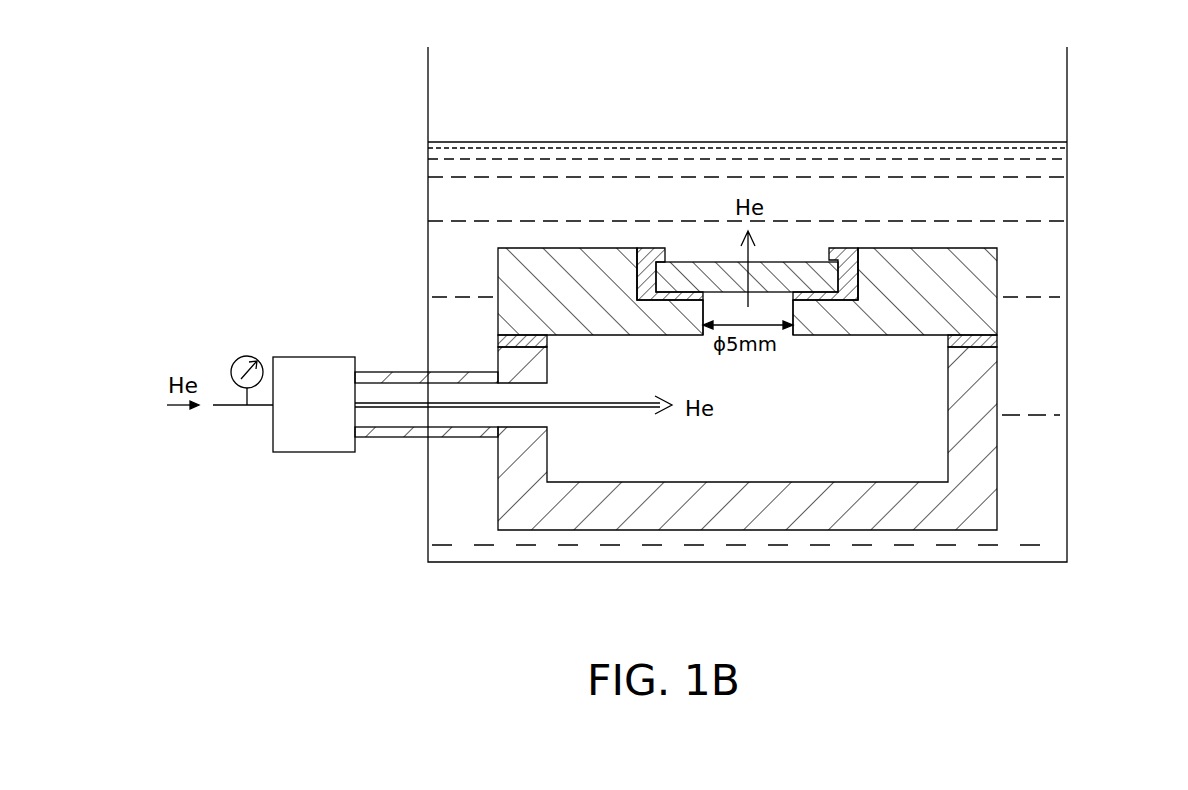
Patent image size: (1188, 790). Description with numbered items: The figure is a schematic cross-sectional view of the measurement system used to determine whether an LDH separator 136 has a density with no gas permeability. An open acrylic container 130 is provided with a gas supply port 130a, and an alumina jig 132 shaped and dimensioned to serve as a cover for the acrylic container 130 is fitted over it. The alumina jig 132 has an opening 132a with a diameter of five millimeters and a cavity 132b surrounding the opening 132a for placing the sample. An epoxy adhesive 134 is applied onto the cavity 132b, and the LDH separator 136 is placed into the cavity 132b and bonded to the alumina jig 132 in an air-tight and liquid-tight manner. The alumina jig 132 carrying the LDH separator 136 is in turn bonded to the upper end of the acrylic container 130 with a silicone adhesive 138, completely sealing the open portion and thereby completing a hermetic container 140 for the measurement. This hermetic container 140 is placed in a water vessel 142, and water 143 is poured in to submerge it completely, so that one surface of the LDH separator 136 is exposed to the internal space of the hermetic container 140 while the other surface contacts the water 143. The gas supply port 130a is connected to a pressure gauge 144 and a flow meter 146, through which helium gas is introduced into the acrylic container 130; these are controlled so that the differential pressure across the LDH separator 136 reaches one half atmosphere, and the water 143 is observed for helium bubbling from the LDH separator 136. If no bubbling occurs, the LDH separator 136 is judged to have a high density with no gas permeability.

The acrylic container 130 is at (754, 350).
The gas supply port 130a is at (392, 438).
The alumina jig 132 is at (982, 278).
The opening 132a is at (800, 311).
The cavity 132b is at (866, 271).
The epoxy adhesive 134 is at (853, 270).
The LDH separator 136 is at (697, 270).
The silicone adhesive 138 is at (987, 343).
The hermetic container 140 is at (1002, 477).
The water vessel 142 is at (1067, 118).
The water 143 is at (448, 170).
The pressure gauge 144 is at (242, 356).
The flow meter 146 is at (317, 372).